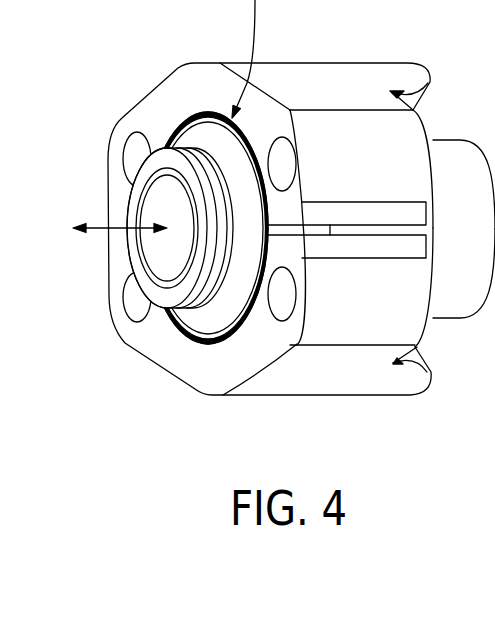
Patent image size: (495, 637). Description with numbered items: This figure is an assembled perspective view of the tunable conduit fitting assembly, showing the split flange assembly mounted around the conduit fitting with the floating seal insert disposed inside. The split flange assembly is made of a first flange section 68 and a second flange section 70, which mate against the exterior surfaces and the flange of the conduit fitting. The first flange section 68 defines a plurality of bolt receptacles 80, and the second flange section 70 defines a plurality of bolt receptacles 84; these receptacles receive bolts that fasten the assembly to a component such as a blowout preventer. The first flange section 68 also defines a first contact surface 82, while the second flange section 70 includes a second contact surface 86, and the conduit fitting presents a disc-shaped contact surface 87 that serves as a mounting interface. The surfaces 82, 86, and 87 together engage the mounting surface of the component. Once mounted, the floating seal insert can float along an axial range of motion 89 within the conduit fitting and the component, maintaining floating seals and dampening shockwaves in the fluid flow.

The first flange section 68 is at (330, 65).
The second flange section 70 is at (333, 358).
The bolt receptacles 80 is at (123, 147).
The first contact surface 82 is at (215, 83).
The bolt receptacles 84 is at (135, 320).
The second contact surface 86 is at (205, 370).
The disc-shaped contact surface 87 is at (202, 132).
The axial range of motion 89 is at (107, 234).